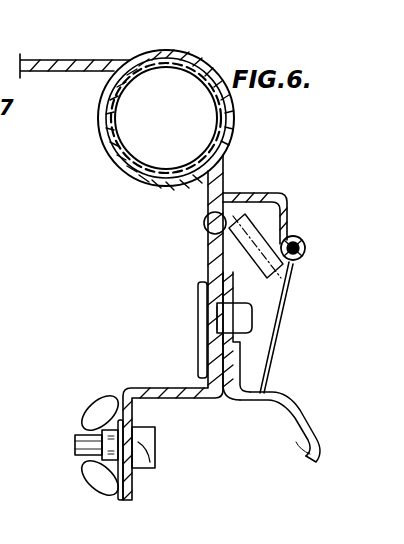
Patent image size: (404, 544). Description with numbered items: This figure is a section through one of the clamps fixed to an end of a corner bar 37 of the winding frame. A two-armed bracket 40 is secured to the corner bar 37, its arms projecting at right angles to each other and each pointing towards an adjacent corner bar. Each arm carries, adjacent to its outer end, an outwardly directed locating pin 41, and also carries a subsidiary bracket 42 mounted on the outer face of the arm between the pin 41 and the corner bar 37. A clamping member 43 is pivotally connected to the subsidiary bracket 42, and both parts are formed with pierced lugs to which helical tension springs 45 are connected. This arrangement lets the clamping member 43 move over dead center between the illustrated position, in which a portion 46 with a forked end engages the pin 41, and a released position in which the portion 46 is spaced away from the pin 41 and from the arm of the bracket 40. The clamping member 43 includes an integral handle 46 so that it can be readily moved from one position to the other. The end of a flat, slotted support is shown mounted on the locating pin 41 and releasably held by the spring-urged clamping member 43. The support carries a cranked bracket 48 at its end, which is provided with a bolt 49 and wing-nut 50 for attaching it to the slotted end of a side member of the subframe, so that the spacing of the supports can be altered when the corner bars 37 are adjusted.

The corner bar 37 is at (100, 130).
The two-armed bracket 40 is at (80, 61).
The locating pin 41 is at (232, 318).
The subsidiary bracket 42 is at (270, 199).
The clamping member 43 is at (259, 362).
The helical tension spring 45 is at (240, 262).
The portion with forked end / integral handle 46 is at (310, 460).
The cranked bracket 48 is at (180, 388).
The bolt 49 is at (150, 462).
The wing-nut 50 is at (102, 478).